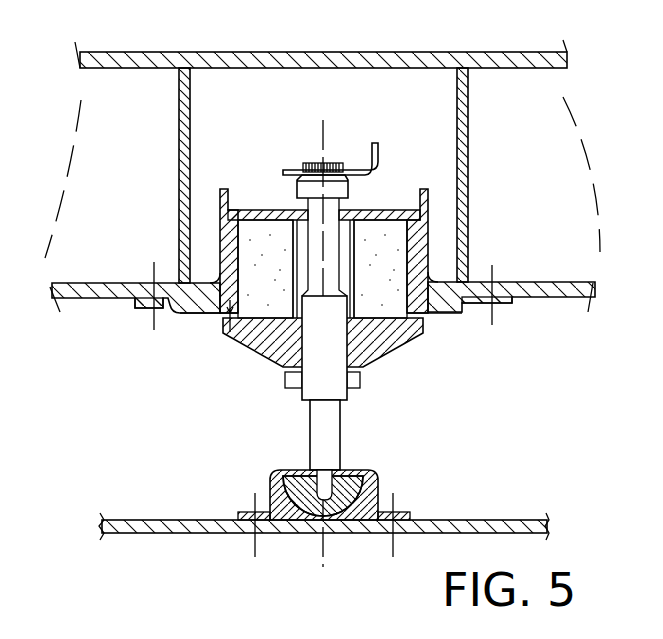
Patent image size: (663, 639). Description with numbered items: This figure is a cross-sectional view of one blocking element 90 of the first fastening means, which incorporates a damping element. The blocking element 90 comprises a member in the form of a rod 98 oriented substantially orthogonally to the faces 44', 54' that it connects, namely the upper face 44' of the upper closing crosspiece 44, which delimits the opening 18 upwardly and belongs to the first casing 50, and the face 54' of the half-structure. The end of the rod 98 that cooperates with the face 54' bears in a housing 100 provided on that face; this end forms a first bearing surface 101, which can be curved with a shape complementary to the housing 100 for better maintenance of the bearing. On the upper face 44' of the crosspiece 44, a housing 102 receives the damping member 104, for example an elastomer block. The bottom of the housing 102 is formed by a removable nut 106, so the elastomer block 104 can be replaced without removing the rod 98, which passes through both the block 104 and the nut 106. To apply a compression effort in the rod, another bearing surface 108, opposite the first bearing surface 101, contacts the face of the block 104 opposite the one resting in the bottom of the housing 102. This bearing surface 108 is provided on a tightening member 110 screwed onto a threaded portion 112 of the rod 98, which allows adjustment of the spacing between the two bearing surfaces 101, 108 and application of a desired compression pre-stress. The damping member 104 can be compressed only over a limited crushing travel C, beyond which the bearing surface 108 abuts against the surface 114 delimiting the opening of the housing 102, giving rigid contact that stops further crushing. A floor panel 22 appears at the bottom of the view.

The upper closing crosspiece 44 is at (341, 161).
The upper face of the crosspiece 44' is at (511, 308).
The first casing 50 is at (76, 325).
The surface delimiting the opening of the housing 114 is at (175, 327).
The bearing surface 108 is at (413, 309).
The limited crushing travel C is at (226, 318).
The blocking element 90 is at (340, 344).
The housing 102 is at (267, 225).
The damping member 104 is at (272, 297).
The removable nut 106 is at (375, 212).
The tightening member 110 is at (380, 352).
The threaded portion 112 is at (308, 396).
The rod 98 is at (335, 442).
The housing 100 is at (283, 532).
The first bearing surface 101 is at (345, 533).
The face of the half-structure 54' is at (329, 506).
The floor panel 22 is at (190, 537).
The opening 18 is at (151, 433).